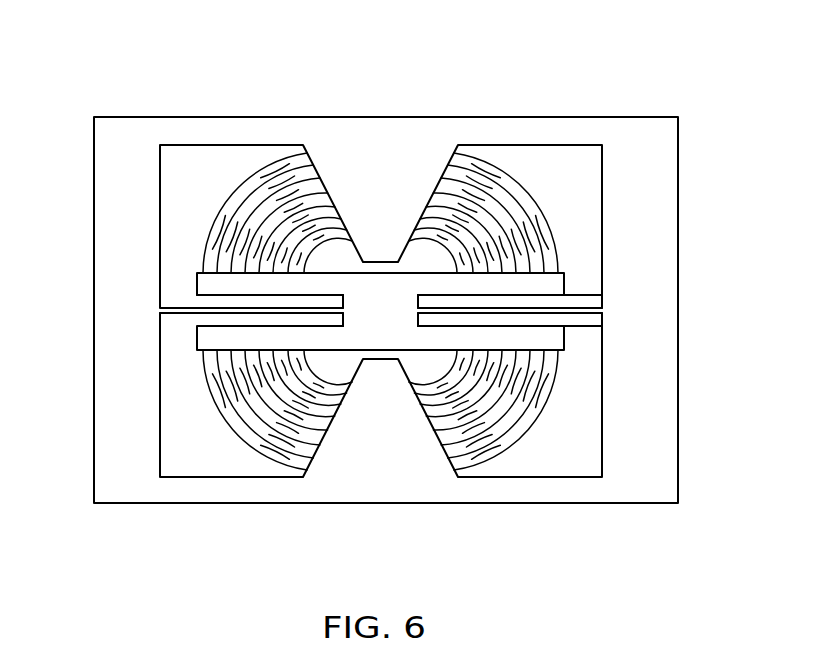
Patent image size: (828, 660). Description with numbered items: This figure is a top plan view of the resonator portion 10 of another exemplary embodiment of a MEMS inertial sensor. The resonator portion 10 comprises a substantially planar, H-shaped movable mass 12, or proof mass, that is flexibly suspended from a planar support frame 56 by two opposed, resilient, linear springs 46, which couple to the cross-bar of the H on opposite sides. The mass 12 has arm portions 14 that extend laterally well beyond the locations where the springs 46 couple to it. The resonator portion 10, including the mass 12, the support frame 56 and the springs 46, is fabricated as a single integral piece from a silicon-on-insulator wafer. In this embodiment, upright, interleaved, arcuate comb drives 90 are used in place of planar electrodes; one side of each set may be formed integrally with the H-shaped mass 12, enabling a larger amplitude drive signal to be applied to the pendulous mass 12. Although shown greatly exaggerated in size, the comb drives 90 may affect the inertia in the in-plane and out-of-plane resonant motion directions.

The resonator portion 10 is at (122, 117).
The movable mass 12 is at (385, 288).
The arm portions 14 is at (550, 286).
The springs 46 is at (235, 313).
The support frame 56 is at (400, 435).
The comb drives 90 is at (252, 183).